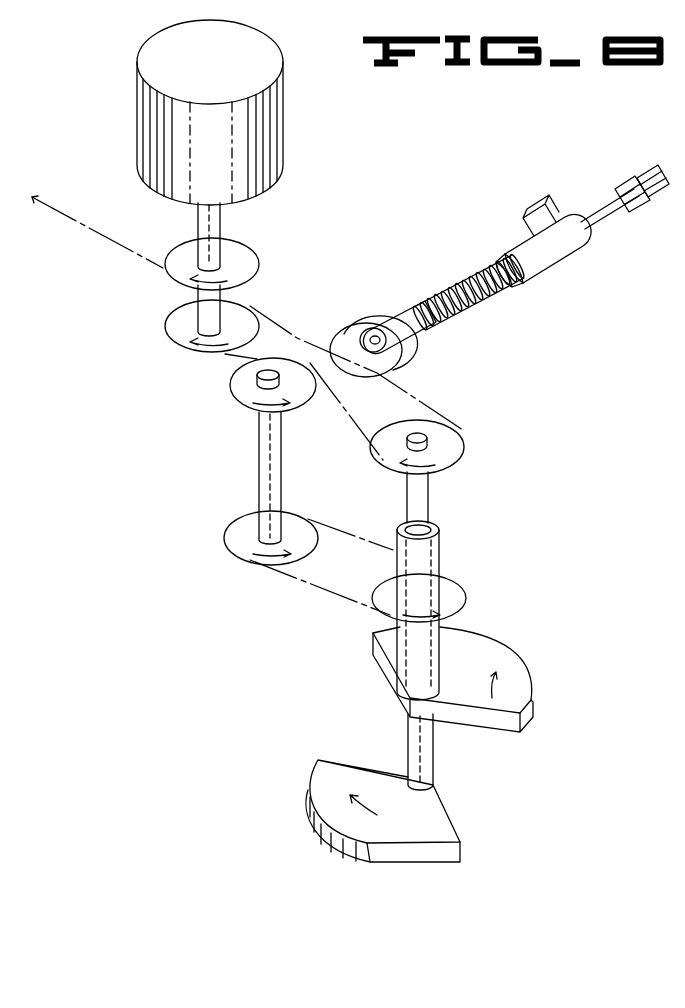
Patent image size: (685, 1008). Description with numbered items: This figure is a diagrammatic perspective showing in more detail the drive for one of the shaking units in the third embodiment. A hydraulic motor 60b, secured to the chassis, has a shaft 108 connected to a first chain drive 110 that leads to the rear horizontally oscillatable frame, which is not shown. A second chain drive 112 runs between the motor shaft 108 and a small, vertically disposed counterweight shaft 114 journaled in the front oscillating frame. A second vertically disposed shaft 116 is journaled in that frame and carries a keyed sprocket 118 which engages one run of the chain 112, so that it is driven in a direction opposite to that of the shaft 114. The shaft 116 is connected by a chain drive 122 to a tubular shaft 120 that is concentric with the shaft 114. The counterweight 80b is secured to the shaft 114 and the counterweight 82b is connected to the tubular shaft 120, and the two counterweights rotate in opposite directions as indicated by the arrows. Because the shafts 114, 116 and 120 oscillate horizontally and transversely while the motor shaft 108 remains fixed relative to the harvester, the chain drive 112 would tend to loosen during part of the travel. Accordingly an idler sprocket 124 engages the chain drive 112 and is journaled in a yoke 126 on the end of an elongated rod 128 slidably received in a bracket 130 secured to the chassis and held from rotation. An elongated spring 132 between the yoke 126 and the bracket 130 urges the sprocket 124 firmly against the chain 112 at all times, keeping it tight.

The hydraulic motor 60b is at (239, 77).
The shaft 108 is at (215, 212).
The first chain drive 110 is at (100, 160).
The second chain drive 112 is at (303, 338).
The counterweight shaft 114 is at (430, 483).
The second vertically disposed shaft 116 is at (258, 452).
The sprocket 118 is at (229, 383).
The tubular shaft 120 is at (433, 540).
The chain drive 122 is at (337, 586).
The idler sprocket 124 is at (412, 367).
The yoke 126 is at (400, 316).
The elongated rod 128 is at (483, 271).
The bracket 130 is at (570, 259).
The elongated spring 132 is at (480, 303).
The counterweight 82b is at (386, 678).
The counterweight 80b is at (333, 766).